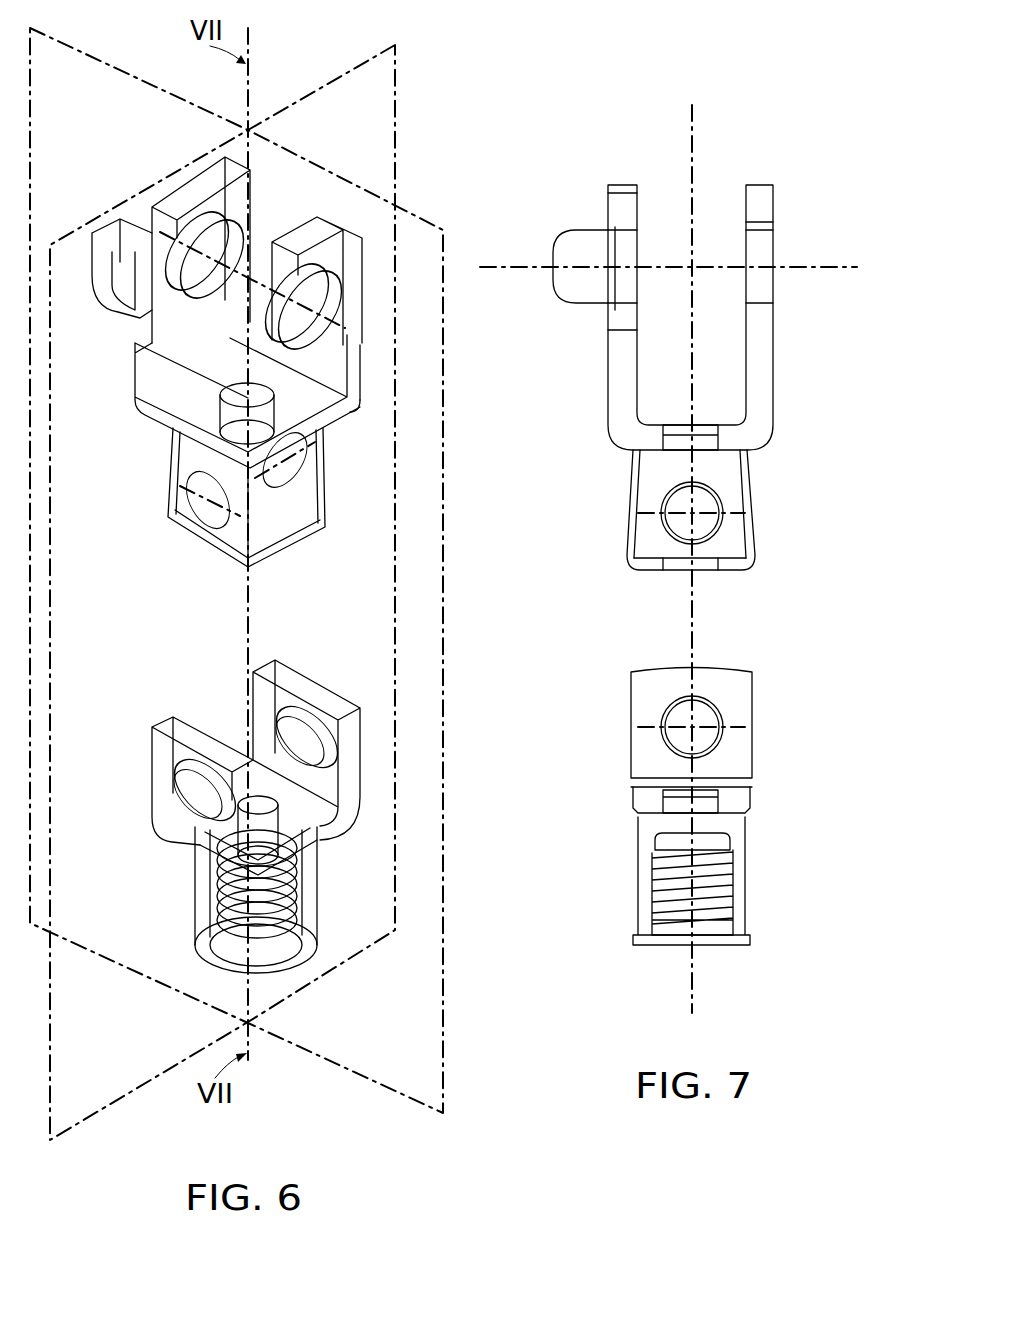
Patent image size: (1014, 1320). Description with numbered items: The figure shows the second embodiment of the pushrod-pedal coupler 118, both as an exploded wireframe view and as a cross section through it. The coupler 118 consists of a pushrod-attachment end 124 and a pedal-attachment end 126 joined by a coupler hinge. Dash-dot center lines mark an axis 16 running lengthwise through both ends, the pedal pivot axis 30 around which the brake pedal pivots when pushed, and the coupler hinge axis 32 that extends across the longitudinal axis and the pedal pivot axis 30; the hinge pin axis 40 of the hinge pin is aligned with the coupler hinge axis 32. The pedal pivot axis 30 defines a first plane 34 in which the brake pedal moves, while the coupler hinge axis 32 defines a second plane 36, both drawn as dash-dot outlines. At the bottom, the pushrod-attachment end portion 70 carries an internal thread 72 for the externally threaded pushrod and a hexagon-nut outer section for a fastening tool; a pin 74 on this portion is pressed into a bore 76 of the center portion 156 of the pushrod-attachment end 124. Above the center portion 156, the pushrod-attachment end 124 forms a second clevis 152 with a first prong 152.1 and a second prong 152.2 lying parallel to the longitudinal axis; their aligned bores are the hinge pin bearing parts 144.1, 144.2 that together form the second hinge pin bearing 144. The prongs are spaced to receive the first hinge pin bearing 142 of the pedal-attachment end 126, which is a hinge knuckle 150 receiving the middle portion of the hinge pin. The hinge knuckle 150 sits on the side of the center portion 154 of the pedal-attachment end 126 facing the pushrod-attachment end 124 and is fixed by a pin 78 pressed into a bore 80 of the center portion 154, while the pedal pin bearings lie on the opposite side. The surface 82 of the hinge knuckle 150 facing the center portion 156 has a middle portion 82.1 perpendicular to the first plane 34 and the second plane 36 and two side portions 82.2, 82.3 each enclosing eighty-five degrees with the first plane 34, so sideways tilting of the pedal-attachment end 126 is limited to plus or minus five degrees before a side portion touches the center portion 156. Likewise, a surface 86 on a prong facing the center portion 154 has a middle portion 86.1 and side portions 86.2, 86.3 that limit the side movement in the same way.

In FIG. 6, the longitudinal axis 16 is at (298, 544).
In FIG. 7, the longitudinal axis 16 is at (763, 559).
In FIG. 6, the pedal pivot axis 30 is at (310, 362).
In FIG. 7, the pedal pivot axis 30 is at (664, 403).
In FIG. 6, the coupler hinge axis 32 is at (305, 480).
In FIG. 7, the coupler hinge axis 32 is at (744, 476).
In FIG. 6, the first plane 34 is at (398, 100).
In FIG. 6, the second plane 36 is at (87, 52).
In FIG. 6, the hinge pin axis 40 is at (247, 480).
In FIG. 7, the hinge pin axis 40 is at (700, 510).
In FIG. 6, the pushrod-attachment end portion 70 is at (297, 923).
In FIG. 7, the pushrod-attachment end portion 70 is at (640, 925).
In FIG. 6, the internal thread 72 is at (298, 952).
In FIG. 7, the internal thread 72 is at (675, 922).
In FIG. 6, the pin 74 is at (313, 850).
In FIG. 7, the pin 74 is at (617, 826).
In FIG. 6, the bore 76 is at (287, 837).
In FIG. 7, the bore 76 is at (662, 802).
In FIG. 6, the pin 78 is at (374, 401).
In FIG. 7, the pin 78 is at (623, 381).
In FIG. 6, the bore 80 is at (262, 410).
In FIG. 7, the surface 82 is at (704, 589).
In FIG. 7, the middle portion 82.1 is at (700, 572).
In FIG. 7, the side portion 82.2 is at (737, 570).
In FIG. 7, the side portion 82.3 is at (653, 570).
In FIG. 6, the surface 86 is at (320, 706).
In FIG. 7, the surface 86 is at (709, 701).
In FIG. 6, the middle portion 86.1 is at (310, 683).
In FIG. 7, the middle portion 86.1 is at (677, 667).
In FIG. 6, the side portion 86.2 is at (340, 708).
In FIG. 7, the side portion 86.2 is at (760, 659).
In FIG. 6, the side portion 86.3 is at (281, 660).
In FIG. 7, the side portion 86.3 is at (645, 667).
In FIG. 6, the pushrod-pedal coupler 118 is at (427, 597).
In FIG. 7, the pushrod-pedal coupler 118 is at (577, 587).
In FIG. 6, the pushrod-attachment end 124 is at (274, 812).
In FIG. 7, the pushrod-attachment end 124 is at (663, 803).
In FIG. 6, the pedal-attachment end 126 is at (406, 156).
In FIG. 7, the pedal-attachment end 126 is at (571, 139).
In FIG. 6, the first hinge pin bearing 142 is at (299, 495).
In FIG. 7, the first hinge pin bearing 142 is at (692, 514).
In FIG. 6, the second hinge pin bearing 144 is at (332, 757).
In FIG. 7, the second hinge pin bearing 144 is at (667, 757).
In FIG. 6, the hinge pin bearing part 144.1 is at (277, 733).
In FIG. 6, the hinge pin bearing part 144.2 is at (183, 755).
In FIG. 6, the hinge knuckle 150 is at (323, 530).
In FIG. 7, the hinge knuckle 150 is at (643, 537).
In FIG. 6, the second clevis 152 is at (258, 745).
In FIG. 7, the second clevis 152 is at (684, 719).
In FIG. 6, the first prong 152.1 is at (261, 744).
In FIG. 6, the second prong 152.2 is at (165, 781).
In FIG. 6, the center portion 154 is at (360, 407).
In FIG. 7, the center portion 154 is at (652, 437).
In FIG. 6, the center portion 156 is at (318, 828).
In FIG. 7, the center portion 156 is at (640, 802).